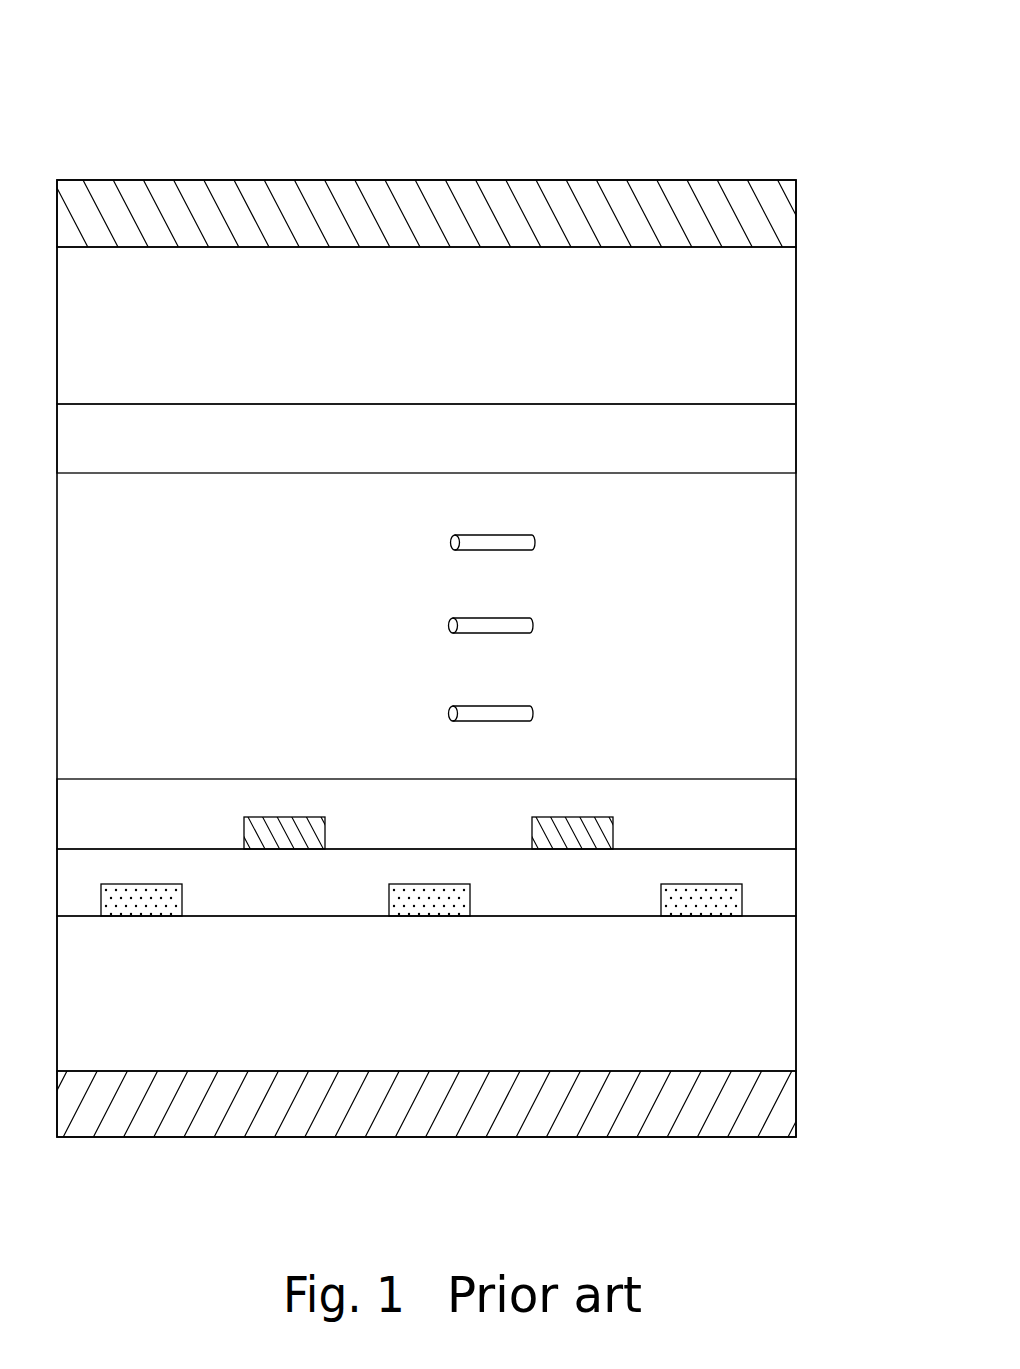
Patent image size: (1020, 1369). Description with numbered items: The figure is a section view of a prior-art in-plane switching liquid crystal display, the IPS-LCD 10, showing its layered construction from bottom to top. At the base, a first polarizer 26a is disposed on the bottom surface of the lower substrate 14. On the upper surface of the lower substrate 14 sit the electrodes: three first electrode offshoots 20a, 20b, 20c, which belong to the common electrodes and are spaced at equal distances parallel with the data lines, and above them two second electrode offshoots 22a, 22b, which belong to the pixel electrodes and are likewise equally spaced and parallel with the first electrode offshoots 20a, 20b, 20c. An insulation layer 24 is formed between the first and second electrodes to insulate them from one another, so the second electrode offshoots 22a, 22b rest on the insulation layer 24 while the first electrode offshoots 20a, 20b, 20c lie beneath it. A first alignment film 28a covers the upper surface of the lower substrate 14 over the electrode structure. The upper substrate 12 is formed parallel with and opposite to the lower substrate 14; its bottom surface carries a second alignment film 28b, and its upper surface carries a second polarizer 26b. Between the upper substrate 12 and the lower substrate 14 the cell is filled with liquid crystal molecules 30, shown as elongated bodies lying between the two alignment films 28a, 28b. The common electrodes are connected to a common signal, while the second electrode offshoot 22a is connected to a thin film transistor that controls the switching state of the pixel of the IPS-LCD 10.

The IPS-LCD 10 is at (657, 58).
The upper substrate 12 is at (767, 343).
The lower substrate 14 is at (767, 1010).
The first electrode offshoot 20a is at (135, 905).
The first electrode offshoot 20b is at (425, 905).
The first electrode offshoot 20c is at (707, 905).
The second electrode offshoot 22a is at (290, 838).
The second electrode offshoot 22b is at (573, 838).
The insulation layer 24 is at (767, 895).
The first polarizer 26a is at (767, 1113).
The second polarizer 26b is at (765, 232).
The first alignment film 28a is at (767, 822).
The second alignment film 28b is at (757, 444).
The liquid crystal molecules 30 is at (538, 548).